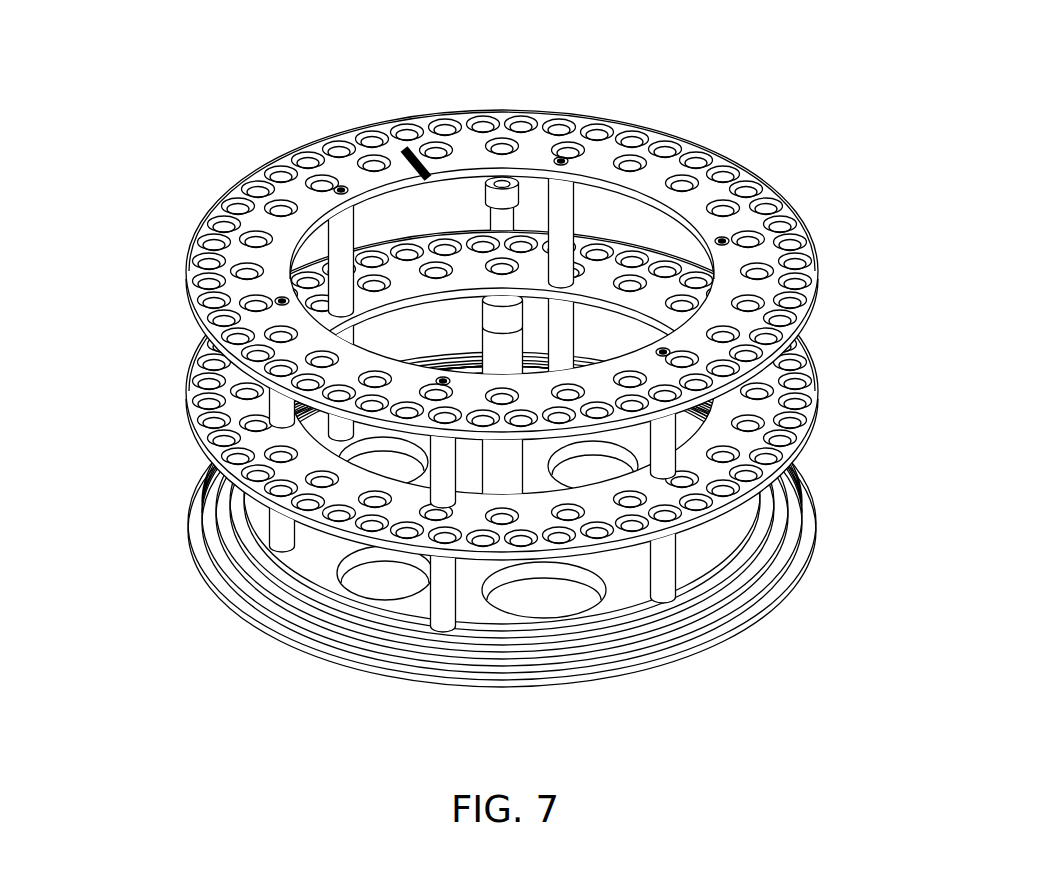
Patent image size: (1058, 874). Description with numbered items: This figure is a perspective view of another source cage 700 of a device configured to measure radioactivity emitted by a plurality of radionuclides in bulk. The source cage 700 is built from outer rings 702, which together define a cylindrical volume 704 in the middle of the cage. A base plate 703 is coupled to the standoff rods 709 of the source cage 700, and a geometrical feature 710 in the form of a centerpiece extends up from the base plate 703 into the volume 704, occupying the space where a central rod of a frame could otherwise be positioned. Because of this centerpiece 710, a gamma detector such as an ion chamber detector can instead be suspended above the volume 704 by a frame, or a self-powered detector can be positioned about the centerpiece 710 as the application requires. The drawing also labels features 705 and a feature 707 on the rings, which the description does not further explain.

The source cage 700 is at (502, 369).
The outer rings 702 is at (296, 139).
The base plate 703 is at (219, 610).
The volume 704 is at (640, 230).
The holes 705 is at (788, 346).
The alignment mark 707 is at (415, 160).
The standoff rods 709 is at (452, 598).
The geometrical feature 710 is at (511, 186).